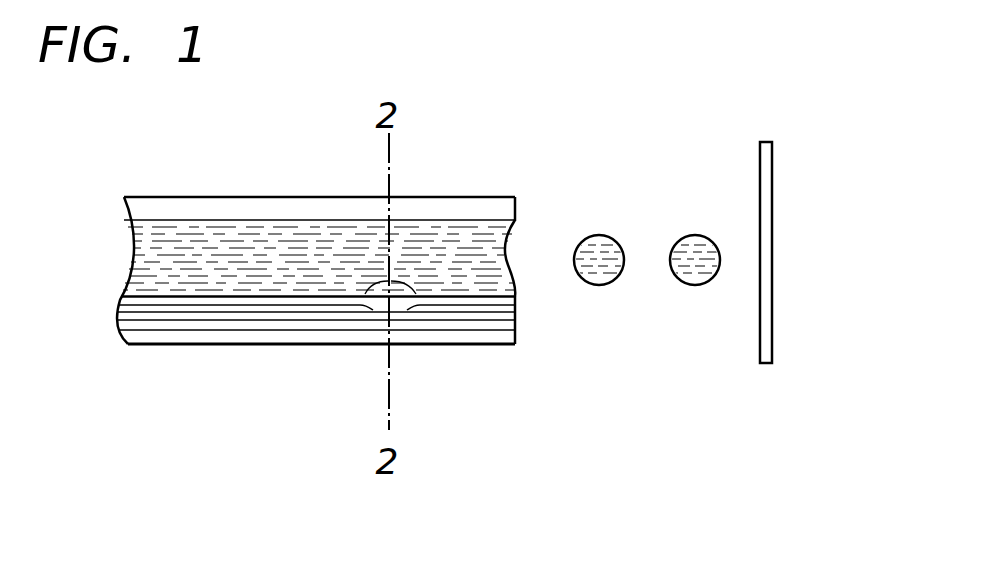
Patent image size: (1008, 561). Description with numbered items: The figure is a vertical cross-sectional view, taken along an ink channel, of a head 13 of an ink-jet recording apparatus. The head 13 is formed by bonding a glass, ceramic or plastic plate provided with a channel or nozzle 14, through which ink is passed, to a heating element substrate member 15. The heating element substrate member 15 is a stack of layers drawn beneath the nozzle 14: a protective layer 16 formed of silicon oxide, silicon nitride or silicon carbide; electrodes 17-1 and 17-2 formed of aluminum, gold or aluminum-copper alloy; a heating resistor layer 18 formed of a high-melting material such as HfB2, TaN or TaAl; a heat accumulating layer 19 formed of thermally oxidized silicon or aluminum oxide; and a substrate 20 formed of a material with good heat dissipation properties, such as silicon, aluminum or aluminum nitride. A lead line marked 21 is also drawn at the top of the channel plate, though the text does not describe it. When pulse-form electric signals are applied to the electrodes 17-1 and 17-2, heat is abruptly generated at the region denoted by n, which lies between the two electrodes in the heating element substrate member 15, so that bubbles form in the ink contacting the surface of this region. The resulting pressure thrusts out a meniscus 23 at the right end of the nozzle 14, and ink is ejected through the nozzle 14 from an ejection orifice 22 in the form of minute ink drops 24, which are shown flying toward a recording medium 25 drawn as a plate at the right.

The head 13 is at (207, 197).
The channel (nozzle) 14 is at (257, 220).
The electrode layer 21 is at (158, 230).
The heat generation region n is at (388, 281).
The meniscus 23 is at (512, 238).
The ejection orifice 22 is at (518, 280).
The heating element substrate member 15 is at (292, 364).
The protective layer 16 is at (157, 302).
The electrode 17-1 is at (207, 310).
The electrode 17-2 is at (477, 308).
The heating resistor layer 18 is at (250, 317).
The heat accumulating layer 19 is at (300, 327).
The substrate 20 is at (363, 338).
The ink drops 24 is at (565, 228).
The recording medium 25 is at (760, 177).